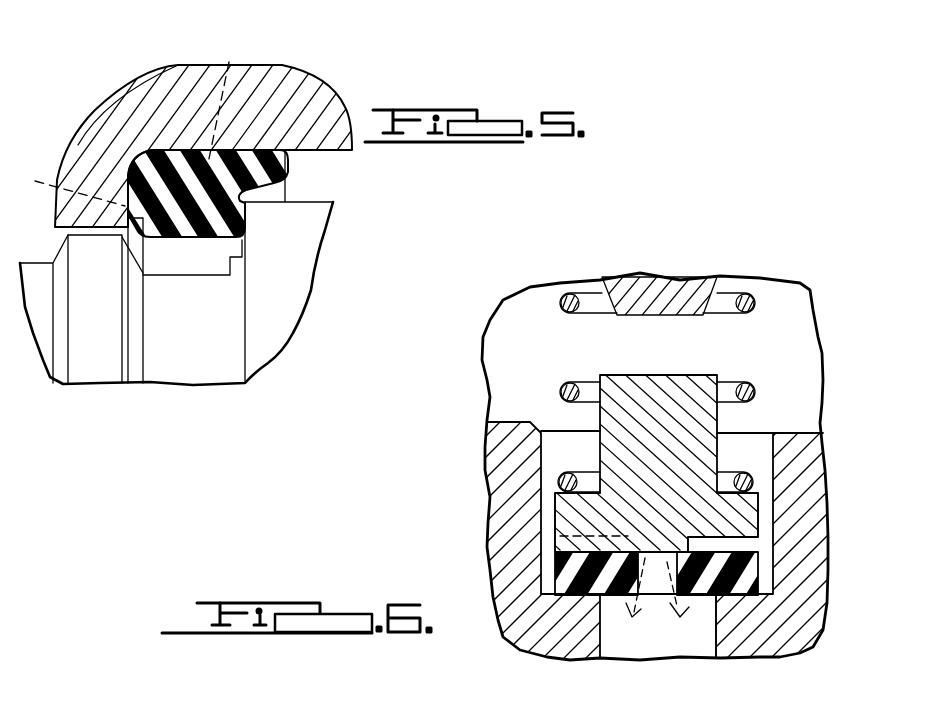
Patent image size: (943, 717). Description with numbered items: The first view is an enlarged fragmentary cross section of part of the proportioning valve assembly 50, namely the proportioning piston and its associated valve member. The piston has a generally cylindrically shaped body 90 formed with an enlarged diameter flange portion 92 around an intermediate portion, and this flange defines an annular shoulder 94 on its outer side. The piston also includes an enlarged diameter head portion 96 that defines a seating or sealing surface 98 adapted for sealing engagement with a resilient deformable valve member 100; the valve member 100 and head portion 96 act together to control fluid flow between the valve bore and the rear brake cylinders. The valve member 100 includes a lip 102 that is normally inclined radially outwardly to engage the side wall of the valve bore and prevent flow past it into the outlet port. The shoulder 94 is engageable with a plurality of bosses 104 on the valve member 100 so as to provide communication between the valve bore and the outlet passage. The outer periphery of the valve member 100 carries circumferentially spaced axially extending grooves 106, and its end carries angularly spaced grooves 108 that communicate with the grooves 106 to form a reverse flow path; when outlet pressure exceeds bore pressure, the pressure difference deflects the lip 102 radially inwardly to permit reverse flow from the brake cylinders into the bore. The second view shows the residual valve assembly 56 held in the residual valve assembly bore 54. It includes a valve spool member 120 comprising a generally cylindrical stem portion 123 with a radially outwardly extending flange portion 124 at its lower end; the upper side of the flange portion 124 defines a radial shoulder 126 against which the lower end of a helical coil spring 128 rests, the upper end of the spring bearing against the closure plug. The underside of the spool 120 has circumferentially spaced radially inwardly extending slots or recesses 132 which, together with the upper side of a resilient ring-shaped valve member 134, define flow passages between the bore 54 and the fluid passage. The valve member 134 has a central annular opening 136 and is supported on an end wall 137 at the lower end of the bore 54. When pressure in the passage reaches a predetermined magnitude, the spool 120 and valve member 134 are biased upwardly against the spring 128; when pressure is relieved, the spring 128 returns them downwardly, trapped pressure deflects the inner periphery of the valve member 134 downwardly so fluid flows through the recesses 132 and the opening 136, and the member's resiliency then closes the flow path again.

In FIG. 5, the proportioning valve assembly 50 is at (318, 300).
In FIG. 5, the body 90 is at (193, 373).
In FIG. 5, the flange portion 92 is at (293, 272).
In FIG. 5, the annular shoulder 94 is at (233, 330).
In FIG. 5, the head portion 96 is at (85, 372).
In FIG. 5, the sealing surface 98 is at (121, 238).
In FIG. 5, the valve member 100 is at (268, 185).
In FIG. 5, the lip 102 is at (275, 148).
In FIG. 5, the bosses 104 is at (245, 228).
In FIG. 5, the axially extending grooves 106 is at (228, 55).
In FIG. 5, the angularly spaced grooves 108 is at (92, 136).
In FIG. 6, the residual valve assembly bore 54 is at (555, 443).
In FIG. 6, the residual valve assembly 56 is at (483, 407).
In FIG. 6, the valve spool member 120 is at (701, 373).
In FIG. 6, the stem portion 123 is at (613, 417).
In FIG. 6, the flange portion 124 is at (748, 512).
In FIG. 6, the radial shoulder 126 is at (733, 470).
In FIG. 6, the helical coil spring 128 is at (763, 392).
In FIG. 6, the slots or recesses 132 is at (740, 546).
In FIG. 6, the ring-shaped valve member 134 is at (608, 596).
In FIG. 6, the central annular opening 136 is at (647, 553).
In FIG. 6, the end wall 137 is at (722, 595).